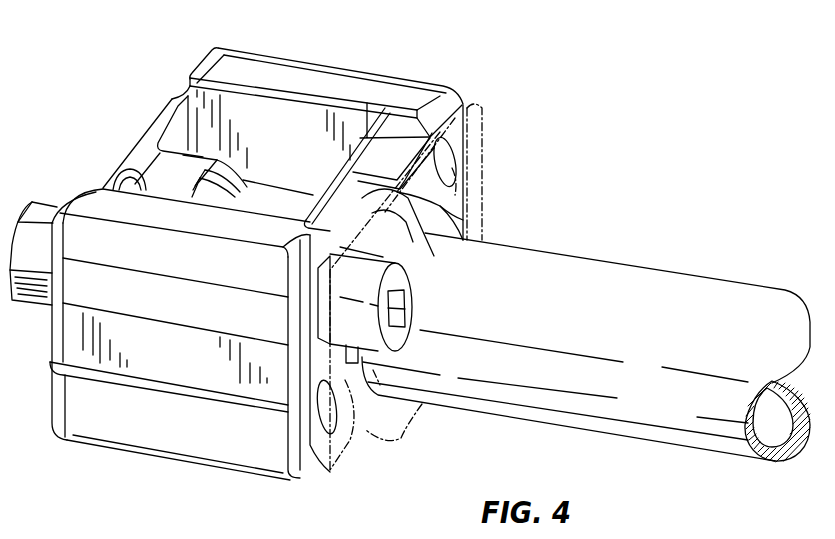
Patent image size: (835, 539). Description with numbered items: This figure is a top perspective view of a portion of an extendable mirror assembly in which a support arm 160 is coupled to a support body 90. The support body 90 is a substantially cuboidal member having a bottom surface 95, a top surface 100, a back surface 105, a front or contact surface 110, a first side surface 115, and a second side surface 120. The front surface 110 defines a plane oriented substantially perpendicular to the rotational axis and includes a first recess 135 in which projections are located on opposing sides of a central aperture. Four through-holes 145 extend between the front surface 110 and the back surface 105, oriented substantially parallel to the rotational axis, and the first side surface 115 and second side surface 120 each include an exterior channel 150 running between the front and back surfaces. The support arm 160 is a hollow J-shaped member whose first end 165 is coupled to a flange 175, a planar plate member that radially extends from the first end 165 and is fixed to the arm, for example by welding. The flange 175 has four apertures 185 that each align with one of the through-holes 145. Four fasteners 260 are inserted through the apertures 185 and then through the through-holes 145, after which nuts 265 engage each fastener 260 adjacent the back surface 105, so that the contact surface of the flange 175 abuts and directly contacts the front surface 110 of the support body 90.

The support body 90 is at (105, 48).
The bottom surface 95 is at (150, 458).
The top surface 100 is at (414, 92).
The back surface 105 is at (110, 173).
The front surface 110 is at (447, 213).
The first side surface 115 is at (227, 437).
The second side surface 120 is at (465, 130).
The first recess 135 is at (357, 215).
The through-holes 145 is at (458, 197).
The exterior channel 150 is at (91, 366).
The support arm 160 is at (673, 270).
The first end 165 is at (627, 225).
The flange 175 is at (403, 441).
The apertures 185 is at (487, 137).
The fasteners 260 is at (408, 300).
The nuts 265 is at (55, 205).